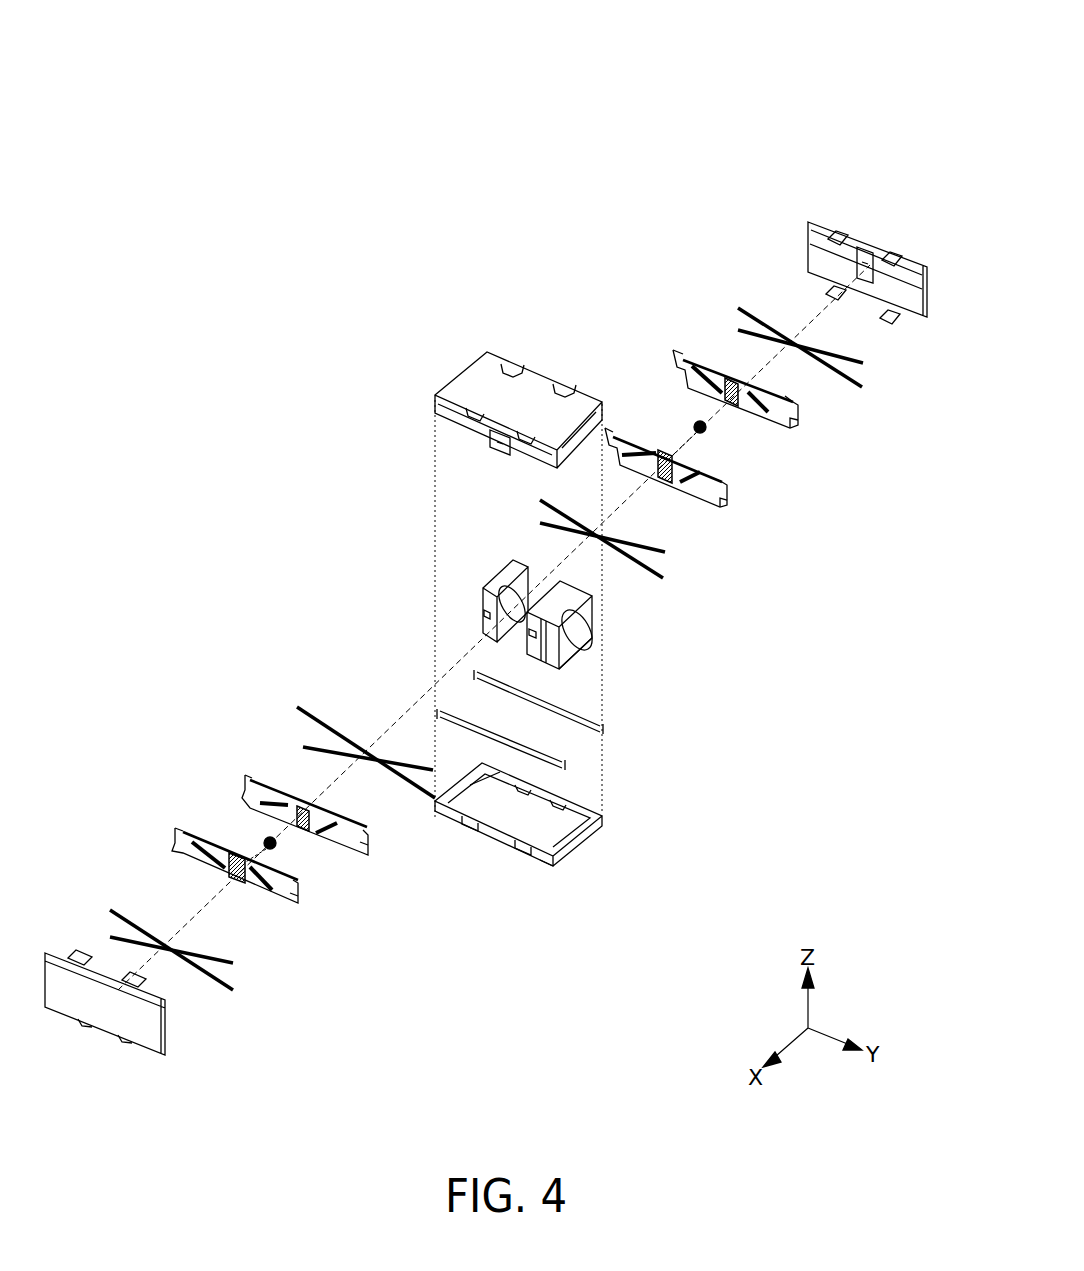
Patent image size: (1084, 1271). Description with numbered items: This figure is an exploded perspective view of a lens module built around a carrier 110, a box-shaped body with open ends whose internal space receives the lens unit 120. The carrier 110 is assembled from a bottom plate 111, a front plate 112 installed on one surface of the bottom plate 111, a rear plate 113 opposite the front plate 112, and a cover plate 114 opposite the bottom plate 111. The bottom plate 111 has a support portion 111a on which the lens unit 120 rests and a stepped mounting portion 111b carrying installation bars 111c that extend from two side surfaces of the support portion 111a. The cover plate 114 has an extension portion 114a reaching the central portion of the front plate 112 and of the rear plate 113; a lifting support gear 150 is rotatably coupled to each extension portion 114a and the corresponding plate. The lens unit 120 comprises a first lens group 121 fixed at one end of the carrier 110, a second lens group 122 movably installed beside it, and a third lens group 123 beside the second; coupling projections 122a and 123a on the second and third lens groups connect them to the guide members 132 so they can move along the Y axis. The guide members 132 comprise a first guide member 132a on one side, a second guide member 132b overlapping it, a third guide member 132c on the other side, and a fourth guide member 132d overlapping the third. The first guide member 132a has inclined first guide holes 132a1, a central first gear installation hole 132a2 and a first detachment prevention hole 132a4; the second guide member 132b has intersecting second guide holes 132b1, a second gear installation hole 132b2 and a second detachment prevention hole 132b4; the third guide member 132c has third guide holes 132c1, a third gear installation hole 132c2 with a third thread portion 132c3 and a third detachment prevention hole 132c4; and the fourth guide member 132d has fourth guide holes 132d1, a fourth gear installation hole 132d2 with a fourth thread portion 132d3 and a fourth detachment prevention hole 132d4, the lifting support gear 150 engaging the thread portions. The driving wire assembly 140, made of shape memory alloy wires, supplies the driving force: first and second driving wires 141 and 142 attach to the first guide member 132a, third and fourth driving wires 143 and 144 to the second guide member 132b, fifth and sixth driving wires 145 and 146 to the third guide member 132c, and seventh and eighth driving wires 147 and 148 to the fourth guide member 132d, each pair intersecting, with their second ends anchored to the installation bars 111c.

The carrier 110 is at (127, 92).
The bottom plate 111 is at (698, 852).
The support portion 111a is at (560, 823).
The mounting portion 111b is at (553, 864).
The installation bars 111c is at (562, 758).
The front plate 112 is at (162, 1040).
The rear plate 113 is at (804, 235).
The cover plate 114 is at (462, 376).
The extension portion 114a is at (495, 450).
The lens unit 120 is at (733, 618).
The first lens group 121 is at (570, 650).
The second lens group 122 is at (533, 600).
The coupling projection 122a is at (527, 638).
The third lens group 123 is at (530, 566).
The coupling projection 123a is at (482, 622).
The guide members 132 is at (305, 92).
The first guide member 132a is at (245, 790).
The first guide holes 132a1 is at (306, 830).
The first gear installation hole 132a2 is at (263, 798).
The first detachment prevention hole 132a4 is at (368, 830).
The second guide member 132b is at (185, 856).
The second guide holes 132b1 is at (242, 878).
The second gear installation hole 132b2 is at (196, 842).
The second detachment prevention hole 132b4 is at (298, 882).
The third guide member 132c is at (612, 432).
The third guide holes 132c1 is at (668, 485).
The third gear installation hole 132c2 is at (650, 470).
The third thread portion 132c3 is at (722, 500).
The third detachment prevention hole 132c4 is at (690, 484).
The fourth guide member 132d is at (680, 372).
The fourth guide holes 132d1 is at (737, 403).
The fourth gear installation hole 132d2 is at (698, 363).
The fourth thread portion 132d3 is at (767, 396).
The fourth detachment prevention hole 132d4 is at (766, 410).
The driving wire assembly 140 is at (479, 30).
The first driving wire 141 is at (297, 707).
The second driving wire 142 is at (303, 747).
The third driving wire 143 is at (235, 990).
The fourth driving wire 144 is at (235, 963).
The fifth driving wire 145 is at (538, 500).
The sixth driving wire 146 is at (538, 523).
The seventh driving wire 147 is at (768, 320).
The eighth driving wire 148 is at (722, 368).
The lifting support gear 150 is at (706, 432).